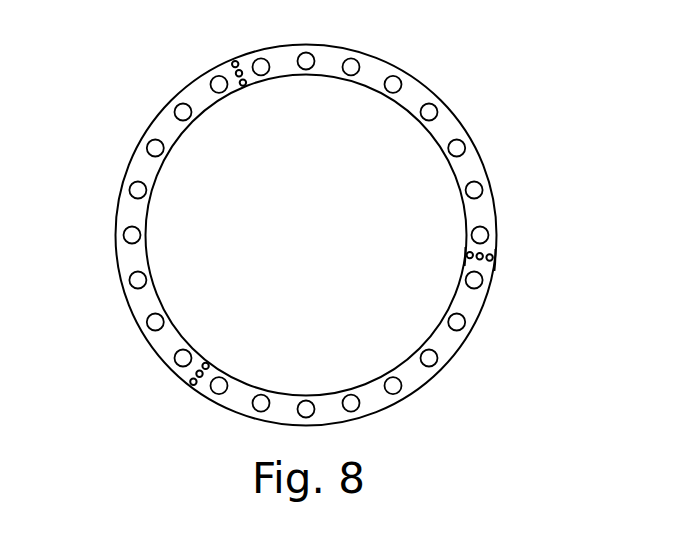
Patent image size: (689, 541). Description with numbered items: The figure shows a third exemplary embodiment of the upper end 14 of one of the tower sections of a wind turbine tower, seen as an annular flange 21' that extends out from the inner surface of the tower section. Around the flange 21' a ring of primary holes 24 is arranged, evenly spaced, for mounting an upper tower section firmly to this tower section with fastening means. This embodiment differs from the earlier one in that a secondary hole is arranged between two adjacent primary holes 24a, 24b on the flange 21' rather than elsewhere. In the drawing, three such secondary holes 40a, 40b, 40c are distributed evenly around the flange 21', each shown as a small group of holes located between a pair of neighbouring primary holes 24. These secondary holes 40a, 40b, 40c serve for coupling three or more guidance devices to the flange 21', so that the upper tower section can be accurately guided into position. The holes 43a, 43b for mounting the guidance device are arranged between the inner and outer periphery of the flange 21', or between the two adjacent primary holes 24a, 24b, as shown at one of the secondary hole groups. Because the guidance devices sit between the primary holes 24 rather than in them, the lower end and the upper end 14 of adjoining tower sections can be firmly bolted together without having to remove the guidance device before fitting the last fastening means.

The upper end 14 is at (127, 157).
The flange 21' is at (361, 235).
The primary holes 24 is at (458, 147).
The primary hole 24a is at (218, 78).
The primary hole 24b is at (262, 63).
The secondary hole 40a is at (237, 76).
The secondary hole 40b is at (490, 256).
The secondary hole 40c is at (193, 372).
The hole 43a is at (467, 263).
The hole 43b is at (491, 263).